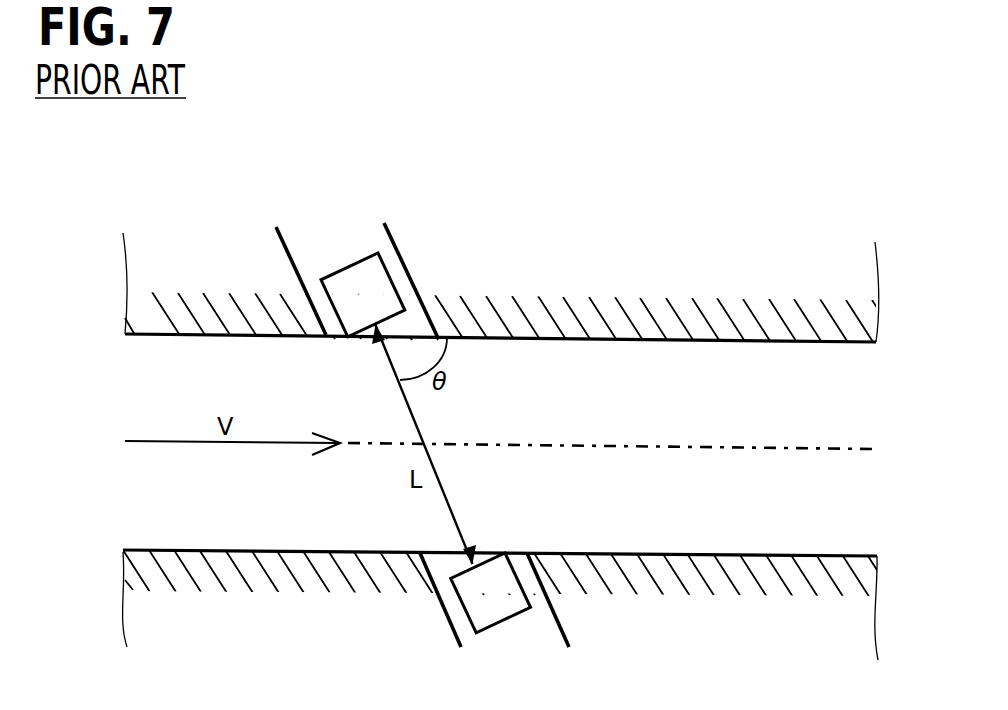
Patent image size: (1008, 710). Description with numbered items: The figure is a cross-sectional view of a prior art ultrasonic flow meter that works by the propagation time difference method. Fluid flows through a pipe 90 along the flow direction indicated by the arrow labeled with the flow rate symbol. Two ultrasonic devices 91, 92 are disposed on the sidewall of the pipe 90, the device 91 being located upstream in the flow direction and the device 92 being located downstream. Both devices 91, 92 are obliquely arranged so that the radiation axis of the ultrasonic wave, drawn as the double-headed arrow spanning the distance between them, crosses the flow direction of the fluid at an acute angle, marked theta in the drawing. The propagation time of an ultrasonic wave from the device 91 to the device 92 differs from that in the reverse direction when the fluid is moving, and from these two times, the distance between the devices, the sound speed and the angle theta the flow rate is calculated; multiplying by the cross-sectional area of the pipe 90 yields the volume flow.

The pipe 90 is at (580, 300).
The device 91 is at (350, 260).
The device 92 is at (502, 627).